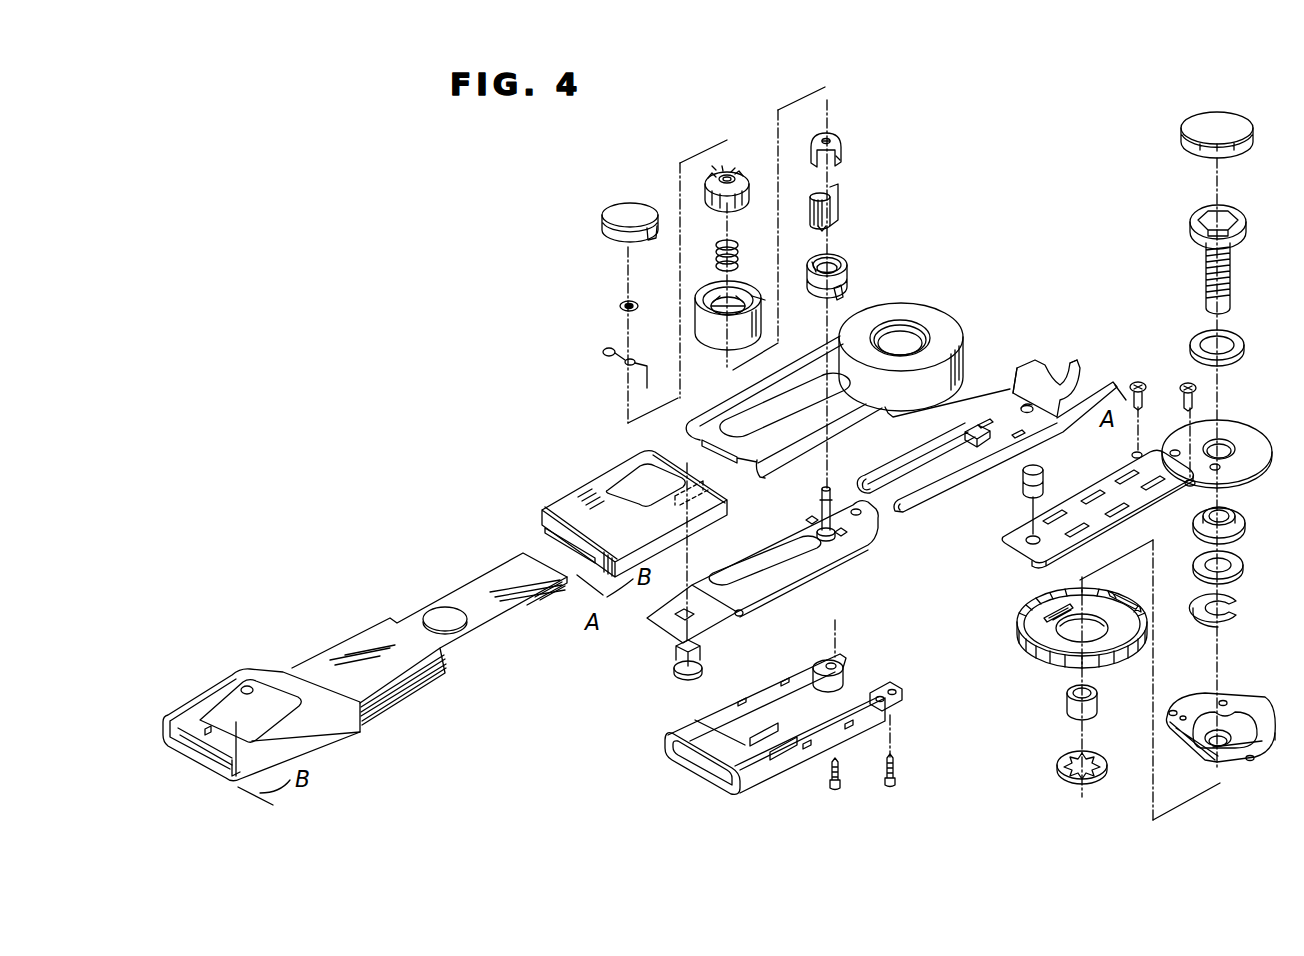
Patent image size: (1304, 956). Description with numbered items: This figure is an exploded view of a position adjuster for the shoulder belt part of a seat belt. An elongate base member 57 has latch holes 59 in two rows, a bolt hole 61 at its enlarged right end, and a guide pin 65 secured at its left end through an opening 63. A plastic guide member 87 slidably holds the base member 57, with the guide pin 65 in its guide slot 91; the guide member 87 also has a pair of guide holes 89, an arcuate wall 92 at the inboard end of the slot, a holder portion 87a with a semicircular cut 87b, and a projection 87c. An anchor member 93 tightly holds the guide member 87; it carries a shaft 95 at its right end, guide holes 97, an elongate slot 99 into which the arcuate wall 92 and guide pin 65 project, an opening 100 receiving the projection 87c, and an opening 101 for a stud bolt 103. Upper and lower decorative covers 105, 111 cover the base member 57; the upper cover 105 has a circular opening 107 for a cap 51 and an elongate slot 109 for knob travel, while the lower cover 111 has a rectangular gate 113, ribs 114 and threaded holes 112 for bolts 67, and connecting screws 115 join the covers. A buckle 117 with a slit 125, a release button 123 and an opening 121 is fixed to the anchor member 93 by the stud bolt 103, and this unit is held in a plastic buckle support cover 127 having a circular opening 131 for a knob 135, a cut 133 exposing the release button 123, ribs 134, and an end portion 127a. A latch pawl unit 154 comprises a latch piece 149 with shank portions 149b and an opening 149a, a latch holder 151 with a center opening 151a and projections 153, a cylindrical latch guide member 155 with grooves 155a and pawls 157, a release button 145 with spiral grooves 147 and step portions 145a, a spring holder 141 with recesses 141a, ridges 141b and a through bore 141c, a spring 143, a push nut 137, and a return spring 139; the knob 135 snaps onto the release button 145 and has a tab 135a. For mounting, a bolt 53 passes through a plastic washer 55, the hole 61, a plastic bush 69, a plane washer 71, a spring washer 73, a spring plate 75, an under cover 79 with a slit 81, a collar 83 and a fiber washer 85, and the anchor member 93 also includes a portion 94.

The cap 51 is at (1253, 130).
The bolt 53 is at (1233, 257).
The plastic washer 55 is at (1235, 350).
The base member 57 is at (1247, 410).
The latch holes 59 is at (1157, 497).
The bolt hole 61 is at (1236, 448).
The opening 63 is at (1027, 545).
The guide pin 65 is at (1021, 481).
The bolts 67 is at (1183, 386).
The plastic bush 69 is at (1245, 520).
The plane washer 71 is at (1242, 560).
The spring washer 73 is at (1243, 610).
The spring plate 75 is at (1247, 703).
The under cover 79 is at (1022, 611).
The slit 81 is at (1108, 596).
The collar 83 is at (1066, 700).
The fiber washer 85 is at (1058, 760).
The guide member 87 is at (957, 490).
The holder portion 87a is at (1033, 385).
The semicircular cut 87b is at (1072, 360).
The projection 87c is at (1025, 405).
The guide holes 89 is at (997, 397).
The guide slot 91 is at (932, 460).
The arcuate wall 92 is at (975, 428).
The anchor member 93 is at (827, 569).
The lever arm 94 is at (778, 578).
The shaft 95 is at (831, 487).
The guide holes 97 is at (811, 516).
The elongate slot 99 is at (755, 568).
The opening 100 is at (872, 514).
The opening 101 is at (695, 617).
The stud bolt 103 is at (700, 672).
The upper cover 105 is at (952, 306).
The circular opening 107 is at (906, 328).
The elongate slot 109 is at (741, 412).
The lower cover 111 is at (780, 775).
The threaded hole 112 is at (845, 667).
The rectangular gate 113 is at (690, 767).
The ribs 114 is at (787, 743).
The connecting screws 115 is at (840, 778).
The buckle 117 is at (560, 500).
The opening 121 is at (690, 495).
The release button 123 is at (635, 482).
The slit 125 is at (542, 534).
The buckle support cover 127 is at (422, 692).
The tongue 127a is at (547, 606).
The circular opening 131 is at (437, 612).
The cut 133 is at (249, 686).
The ribs 134 is at (238, 773).
The knob 135 is at (632, 208).
The tab 135a is at (645, 240).
The push nut 137 is at (620, 306).
The return spring 139 is at (610, 357).
The spring holder 141 is at (744, 172).
The recesses 141a is at (733, 170).
The ridges 141b is at (716, 168).
The through bore 141c is at (723, 168).
The spring 143 is at (719, 245).
The release button 145 is at (693, 348).
The step portions 145a is at (760, 292).
The spiral grooves 147 is at (760, 330).
The latch piece 149 is at (841, 146).
The opening 149a is at (826, 138).
The shank portions 149b is at (838, 160).
The latch holder 151 is at (831, 206).
The center opening 151a is at (828, 228).
The projections 153 is at (812, 203).
The latch pawl unit 154 is at (922, 213).
The latch guide member 155 is at (848, 262).
The grooves 155a is at (817, 260).
The pawls 157 is at (845, 295).